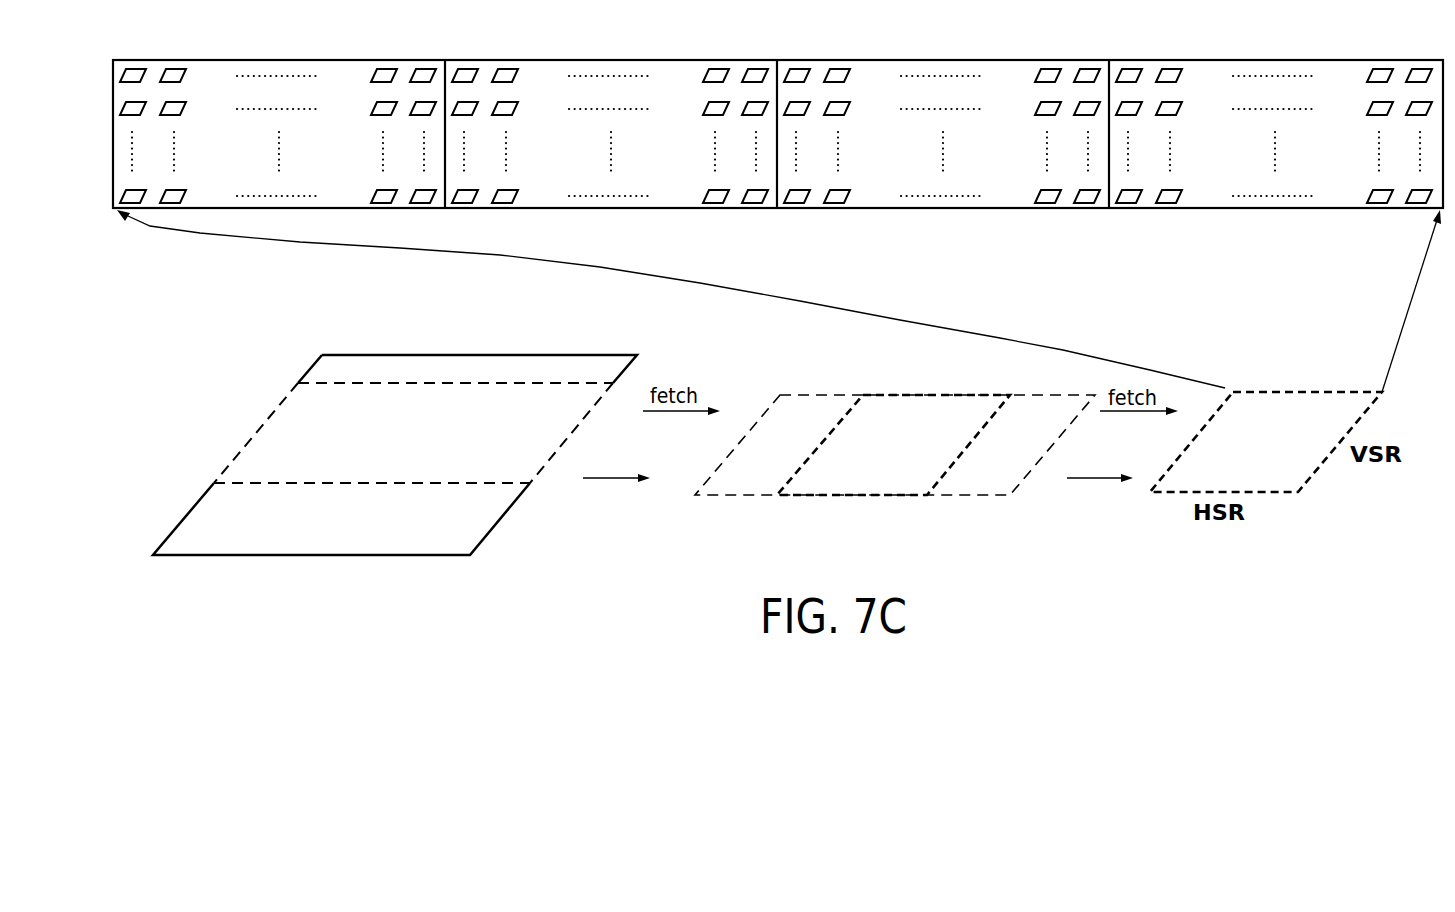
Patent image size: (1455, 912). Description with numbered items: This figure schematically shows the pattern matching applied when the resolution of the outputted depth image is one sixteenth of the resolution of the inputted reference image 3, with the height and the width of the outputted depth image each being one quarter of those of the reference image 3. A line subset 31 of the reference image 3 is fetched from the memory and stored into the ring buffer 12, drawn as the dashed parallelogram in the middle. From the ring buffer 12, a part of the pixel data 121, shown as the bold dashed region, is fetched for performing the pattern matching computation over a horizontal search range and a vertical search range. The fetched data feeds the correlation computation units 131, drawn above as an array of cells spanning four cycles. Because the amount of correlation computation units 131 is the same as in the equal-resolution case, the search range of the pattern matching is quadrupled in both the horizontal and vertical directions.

The correlation computation units 131 is at (775, 113).
The reference image 3 is at (395, 438).
The line subset 31 is at (285, 420).
The ring buffer 12 is at (895, 426).
The pixel data 121 is at (913, 417).